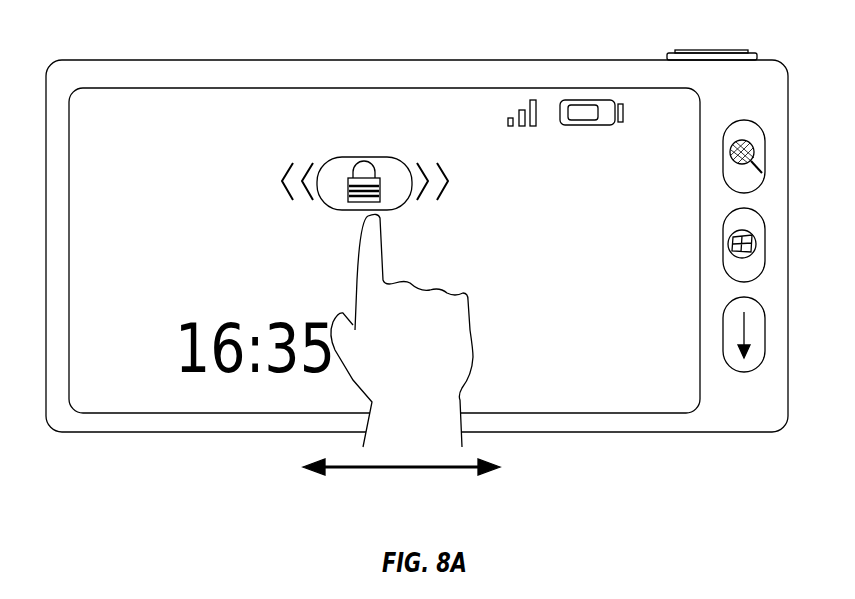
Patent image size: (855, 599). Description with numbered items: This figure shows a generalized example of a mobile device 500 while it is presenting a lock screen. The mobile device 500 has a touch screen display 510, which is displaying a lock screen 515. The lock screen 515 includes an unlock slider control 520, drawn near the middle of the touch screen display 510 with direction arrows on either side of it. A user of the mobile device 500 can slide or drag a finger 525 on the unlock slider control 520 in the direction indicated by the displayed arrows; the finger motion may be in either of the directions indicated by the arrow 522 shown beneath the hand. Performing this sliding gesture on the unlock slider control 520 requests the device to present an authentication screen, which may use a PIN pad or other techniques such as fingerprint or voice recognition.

The mobile device 500 is at (112, 60).
The touch screen display 510 is at (120, 117).
The lock screen 515 is at (277, 117).
The unlock slider control 520 is at (362, 157).
The arrow 522 is at (405, 470).
The finger 525 is at (373, 260).